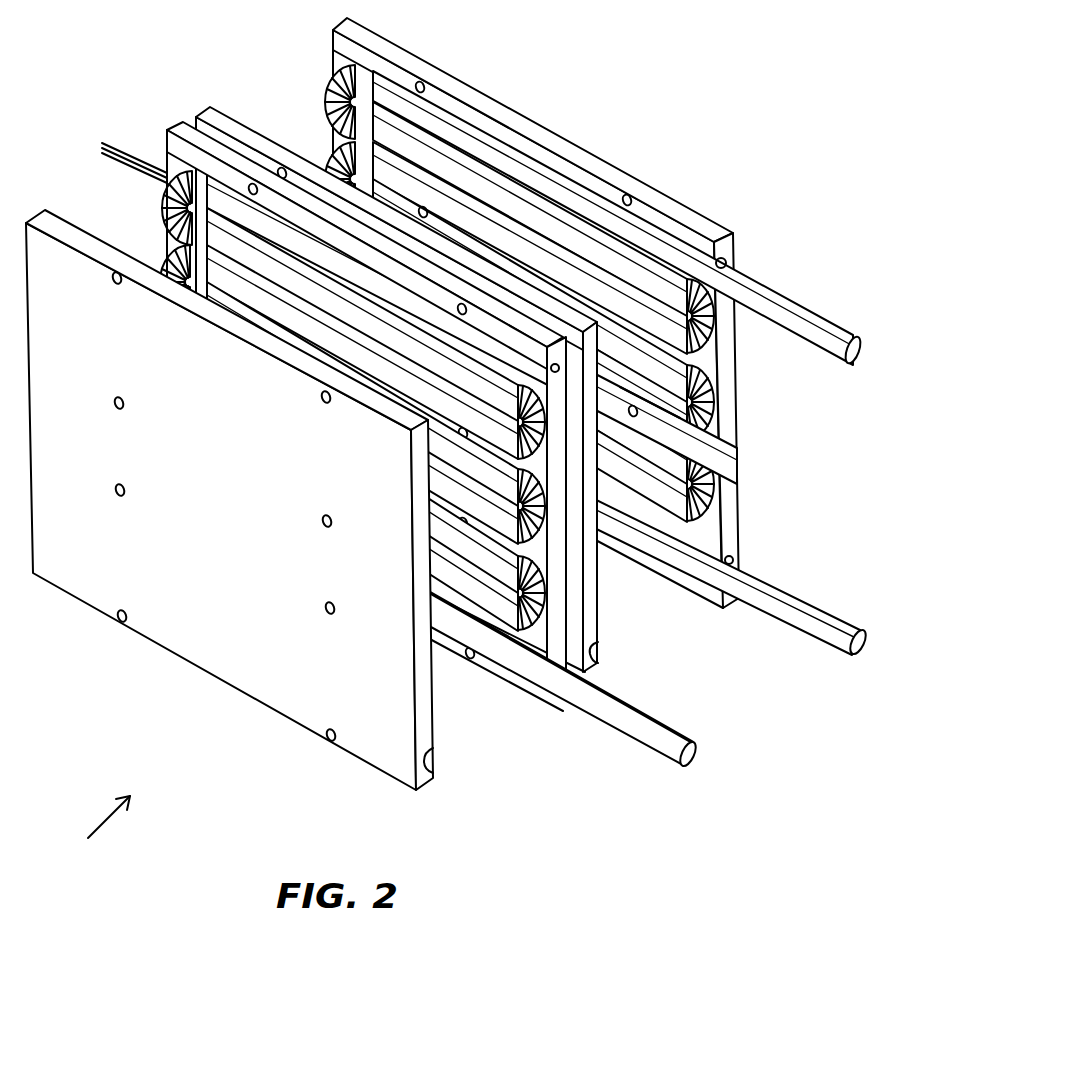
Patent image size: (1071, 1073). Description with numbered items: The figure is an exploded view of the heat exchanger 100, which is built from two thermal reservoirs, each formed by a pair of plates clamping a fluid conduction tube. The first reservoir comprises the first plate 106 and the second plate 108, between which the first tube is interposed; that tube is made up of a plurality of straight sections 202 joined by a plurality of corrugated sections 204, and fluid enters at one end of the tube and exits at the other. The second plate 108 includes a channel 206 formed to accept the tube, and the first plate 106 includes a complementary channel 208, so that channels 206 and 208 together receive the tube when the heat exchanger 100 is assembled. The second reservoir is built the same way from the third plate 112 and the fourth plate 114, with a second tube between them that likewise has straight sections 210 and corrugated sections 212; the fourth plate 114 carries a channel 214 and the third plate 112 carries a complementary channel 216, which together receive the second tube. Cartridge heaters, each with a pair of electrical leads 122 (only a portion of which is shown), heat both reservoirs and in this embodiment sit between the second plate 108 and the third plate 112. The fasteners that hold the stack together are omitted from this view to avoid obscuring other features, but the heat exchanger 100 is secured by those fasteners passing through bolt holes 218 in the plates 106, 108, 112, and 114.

The heat exchanger 100 is at (94, 847).
The first plate 106 is at (274, 514).
The second plate 108 is at (347, 388).
The third plate 112 is at (396, 377).
The fourth plate 114 is at (536, 310).
The electrical leads 122 is at (106, 136).
The straight sections 202 is at (130, 245).
The corrugated sections 204 is at (538, 435).
The channel 206 is at (718, 415).
The channel 208 is at (473, 783).
The straight sections 210 is at (506, 293).
The corrugated sections 212 is at (756, 409).
The channel 214 is at (753, 223).
The complementary channel 216 is at (647, 669).
The bolt holes 218 is at (224, 506).